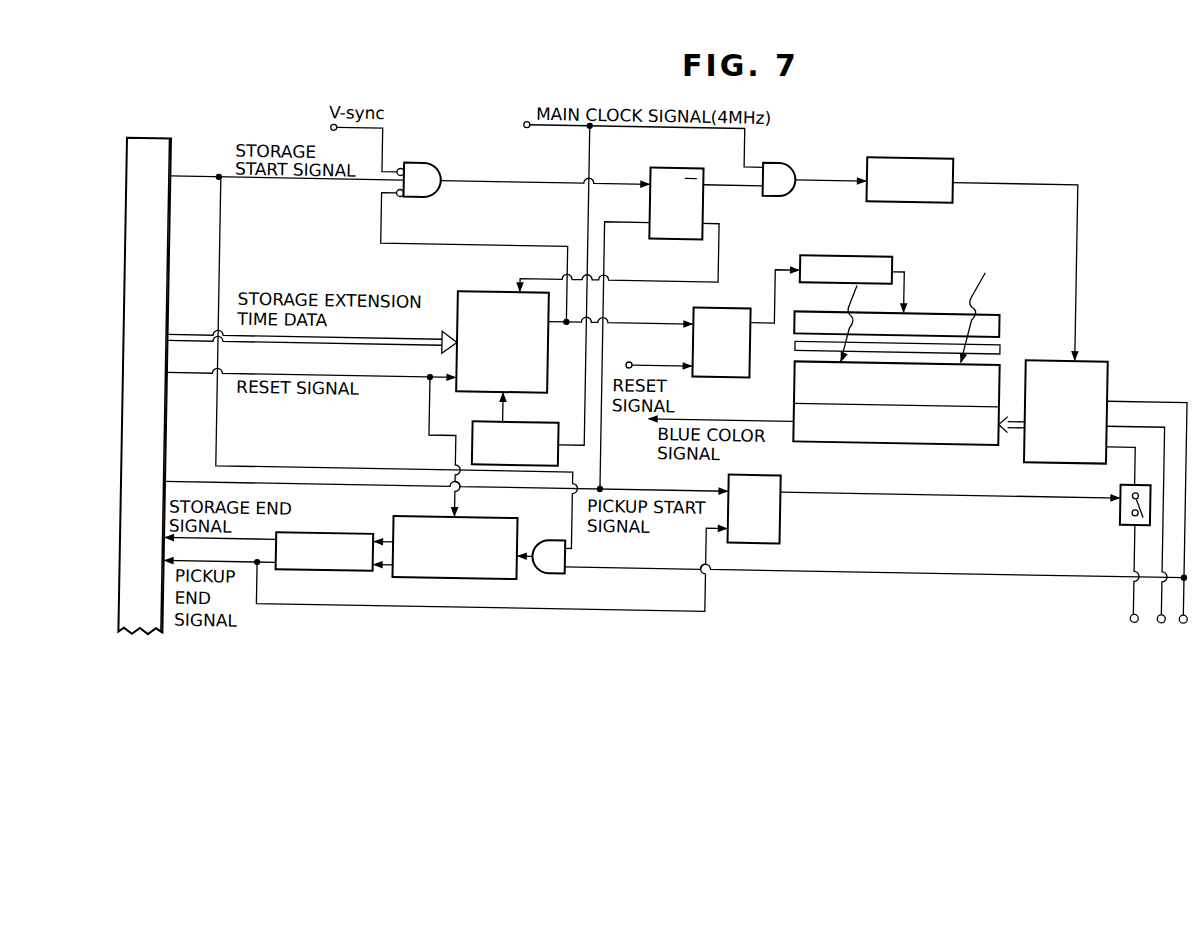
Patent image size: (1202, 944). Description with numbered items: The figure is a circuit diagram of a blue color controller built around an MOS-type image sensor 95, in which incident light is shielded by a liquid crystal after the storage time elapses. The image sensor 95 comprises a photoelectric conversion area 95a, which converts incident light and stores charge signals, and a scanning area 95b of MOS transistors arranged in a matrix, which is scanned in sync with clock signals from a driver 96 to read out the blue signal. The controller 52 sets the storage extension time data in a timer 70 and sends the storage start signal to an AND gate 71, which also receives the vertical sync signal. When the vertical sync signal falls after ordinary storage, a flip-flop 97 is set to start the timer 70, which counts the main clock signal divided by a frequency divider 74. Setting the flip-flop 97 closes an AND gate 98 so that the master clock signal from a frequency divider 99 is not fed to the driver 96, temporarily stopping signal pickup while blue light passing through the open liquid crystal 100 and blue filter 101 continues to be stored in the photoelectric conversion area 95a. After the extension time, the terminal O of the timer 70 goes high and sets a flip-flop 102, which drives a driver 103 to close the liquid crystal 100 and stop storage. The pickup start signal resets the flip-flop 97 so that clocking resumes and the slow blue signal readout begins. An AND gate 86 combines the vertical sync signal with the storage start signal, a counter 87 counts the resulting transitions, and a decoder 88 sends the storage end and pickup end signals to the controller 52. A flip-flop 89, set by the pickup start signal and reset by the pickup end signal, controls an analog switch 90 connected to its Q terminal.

The controller 52 is at (136, 146).
The AND gate 71 is at (419, 166).
The flip-flop 97 is at (670, 180).
The AND gate 98 is at (776, 193).
The frequency divider 99 is at (908, 153).
The driver 103 is at (848, 252).
The liquid crystal 100 is at (932, 308).
The blue filter 101 is at (996, 340).
The driver 96 is at (1090, 353).
The MOS-type image sensor 95 is at (930, 441).
The photoelectric conversion area 95a is at (794, 386).
The scanning area 95b is at (980, 430).
The flip-flop 102 is at (723, 368).
The timer 70 is at (483, 294).
The frequency divider 74 is at (537, 424).
The flip-flop 89 is at (773, 529).
The analog switch 90 is at (1122, 505).
The decoder 88 is at (343, 577).
The counter 87 is at (458, 581).
The AND gate 86 is at (556, 577).